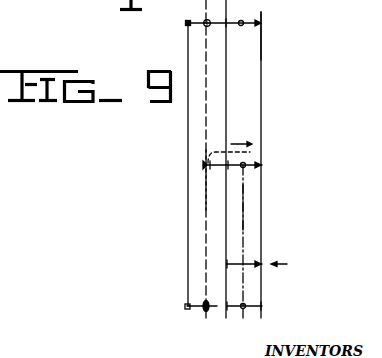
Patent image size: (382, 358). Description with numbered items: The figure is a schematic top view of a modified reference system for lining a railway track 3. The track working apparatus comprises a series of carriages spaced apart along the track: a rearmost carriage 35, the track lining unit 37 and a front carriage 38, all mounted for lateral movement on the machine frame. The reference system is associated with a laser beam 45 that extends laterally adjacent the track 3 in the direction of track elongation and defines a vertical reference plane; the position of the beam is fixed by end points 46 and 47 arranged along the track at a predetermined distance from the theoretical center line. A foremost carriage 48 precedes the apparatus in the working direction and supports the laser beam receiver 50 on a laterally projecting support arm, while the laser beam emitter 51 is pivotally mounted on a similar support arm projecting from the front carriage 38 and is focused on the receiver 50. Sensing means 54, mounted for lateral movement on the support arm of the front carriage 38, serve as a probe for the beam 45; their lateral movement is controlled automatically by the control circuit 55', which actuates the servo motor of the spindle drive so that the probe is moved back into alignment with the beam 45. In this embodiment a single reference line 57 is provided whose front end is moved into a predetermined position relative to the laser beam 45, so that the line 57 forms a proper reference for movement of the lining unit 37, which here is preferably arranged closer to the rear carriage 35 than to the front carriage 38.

The track 3 is at (262, 44).
The rearmost carriage 35 is at (244, 318).
The track lining unit 37 is at (262, 262).
The front carriage 38 is at (245, 165).
The laser beam 45 is at (205, 200).
The end point 46 is at (187, 26).
The end point 47 is at (185, 306).
The foremost carriage 48 is at (269, 17).
The laser beam receiver 50 is at (205, 13).
The laser beam emitter 51 is at (201, 318).
The sensing means 54 is at (204, 163).
The control circuit 55' is at (248, 150).
The reference line 57 is at (244, 209).